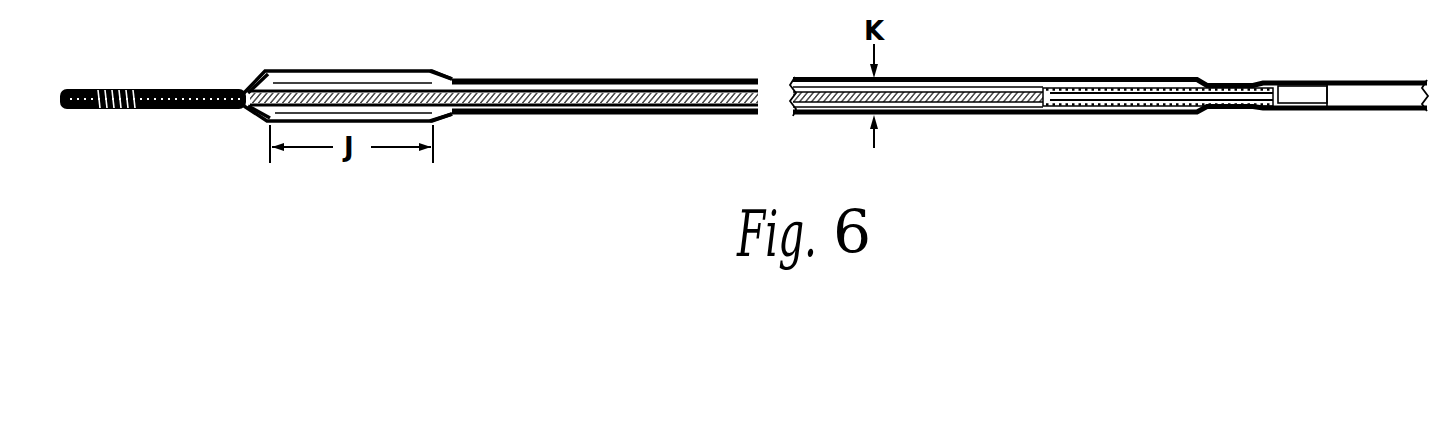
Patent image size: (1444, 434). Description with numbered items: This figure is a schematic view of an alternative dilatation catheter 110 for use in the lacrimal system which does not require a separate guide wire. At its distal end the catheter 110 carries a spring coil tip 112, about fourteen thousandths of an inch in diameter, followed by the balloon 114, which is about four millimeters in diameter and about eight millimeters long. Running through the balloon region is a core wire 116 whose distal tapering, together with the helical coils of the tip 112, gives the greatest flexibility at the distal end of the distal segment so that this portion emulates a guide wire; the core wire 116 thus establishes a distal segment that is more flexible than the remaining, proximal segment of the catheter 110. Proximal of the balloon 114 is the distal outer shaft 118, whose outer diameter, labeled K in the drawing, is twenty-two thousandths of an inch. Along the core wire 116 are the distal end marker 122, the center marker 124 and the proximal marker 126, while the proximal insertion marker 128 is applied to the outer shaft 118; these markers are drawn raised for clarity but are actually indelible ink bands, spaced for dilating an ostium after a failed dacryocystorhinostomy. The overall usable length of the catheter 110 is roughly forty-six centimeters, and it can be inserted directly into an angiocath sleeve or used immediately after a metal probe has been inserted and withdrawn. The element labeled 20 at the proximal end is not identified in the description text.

The dilatation catheter 110 is at (1023, 18).
The spring coil tip 112 is at (130, 88).
The balloon 114 is at (390, 70).
The core wire 116 is at (653, 105).
The distal outer shaft 118 is at (685, 78).
The distal end marker 122 is at (273, 83).
The center marker 124 is at (347, 83).
The proximal marker 126 is at (435, 75).
The proximal insertion marker 128 is at (737, 115).
The connector block 20 is at (1304, 110).